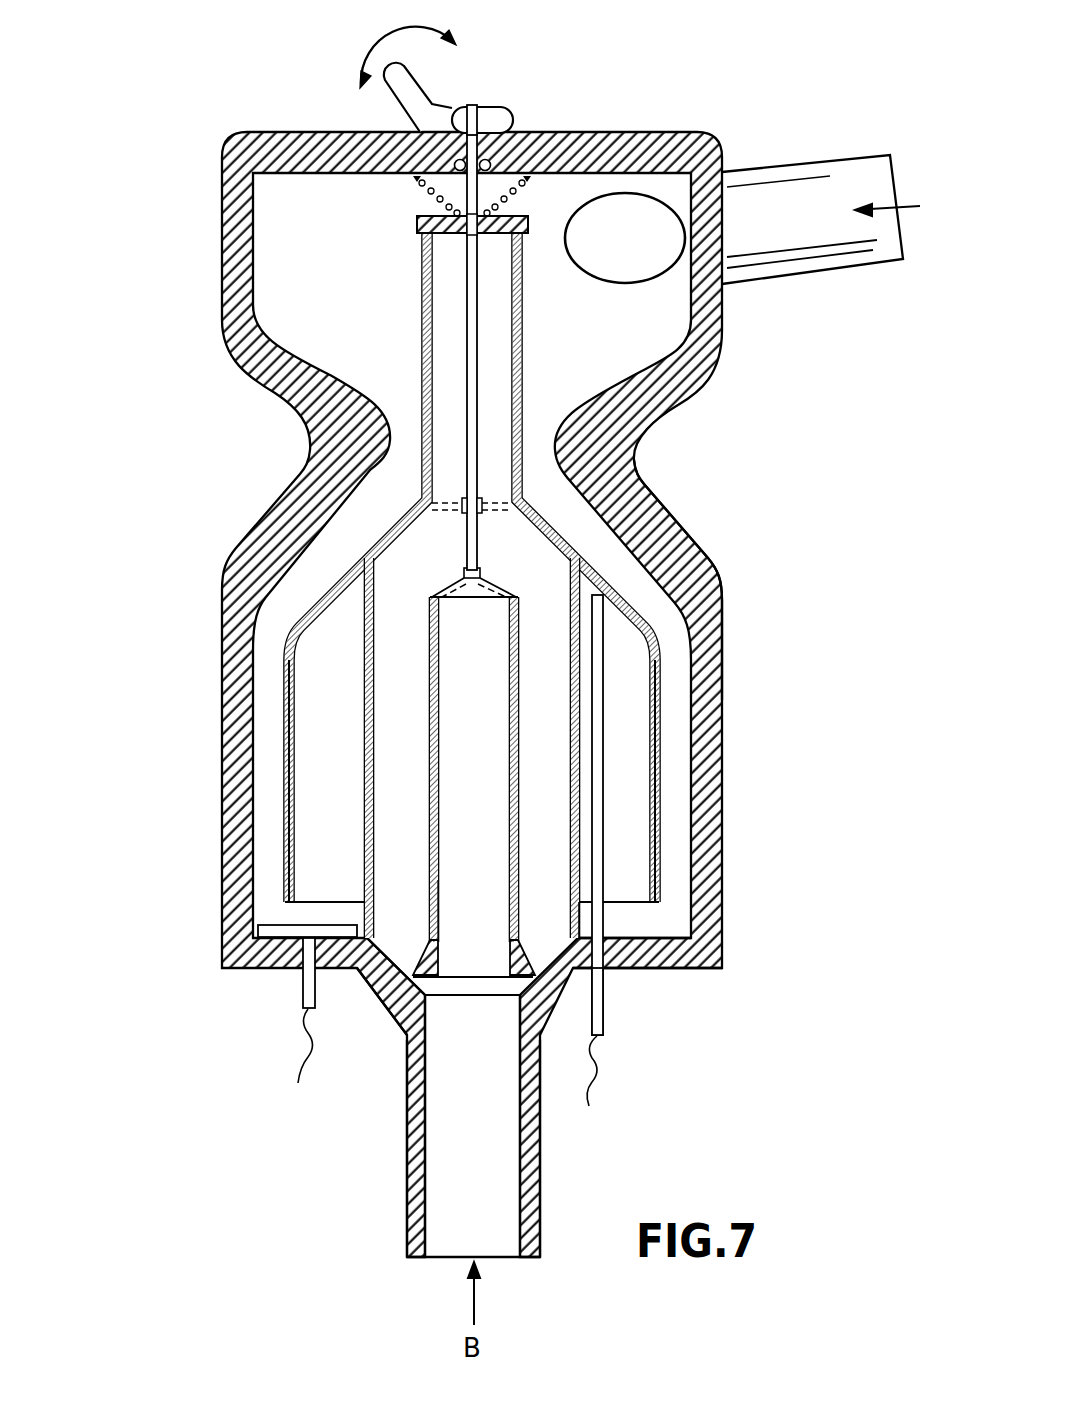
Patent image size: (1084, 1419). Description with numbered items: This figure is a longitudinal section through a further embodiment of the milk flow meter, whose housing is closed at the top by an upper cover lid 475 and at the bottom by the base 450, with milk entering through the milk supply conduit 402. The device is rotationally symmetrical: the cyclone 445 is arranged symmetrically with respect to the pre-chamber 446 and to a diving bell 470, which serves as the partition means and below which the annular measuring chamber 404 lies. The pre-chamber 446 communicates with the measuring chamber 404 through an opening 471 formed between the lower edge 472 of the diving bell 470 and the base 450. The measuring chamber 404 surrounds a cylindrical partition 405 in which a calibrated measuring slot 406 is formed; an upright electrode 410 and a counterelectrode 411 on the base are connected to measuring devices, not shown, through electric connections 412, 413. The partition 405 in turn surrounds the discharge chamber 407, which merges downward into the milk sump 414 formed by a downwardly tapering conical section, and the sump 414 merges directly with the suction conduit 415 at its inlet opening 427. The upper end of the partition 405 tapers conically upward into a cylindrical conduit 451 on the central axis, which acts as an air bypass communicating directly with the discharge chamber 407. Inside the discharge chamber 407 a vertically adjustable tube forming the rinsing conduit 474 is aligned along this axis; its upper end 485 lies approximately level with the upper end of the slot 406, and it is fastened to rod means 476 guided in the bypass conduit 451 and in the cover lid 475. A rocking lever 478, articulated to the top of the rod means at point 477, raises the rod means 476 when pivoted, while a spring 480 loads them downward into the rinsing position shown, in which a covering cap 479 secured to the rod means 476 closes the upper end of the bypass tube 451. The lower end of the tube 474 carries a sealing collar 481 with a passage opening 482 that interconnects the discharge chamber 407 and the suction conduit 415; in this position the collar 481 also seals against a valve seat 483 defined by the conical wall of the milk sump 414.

The milk supply conduit 402 is at (810, 206).
The measuring chamber 404 is at (660, 820).
The cylindrical partition 405 is at (352, 750).
The calibrated measuring slot 406 is at (572, 688).
The discharge chamber 407 is at (432, 820).
The electrode 410 is at (597, 1012).
The counterelectrode 411 is at (277, 928).
The tube end 412 is at (592, 1107).
The drain tube 413 is at (306, 1030).
The milk sump 414 is at (407, 945).
The suction conduit 415 is at (470, 1137).
The inlet opening of the suction conduit 427 is at (458, 995).
The cyclone 445 is at (368, 301).
The pre-chamber 446 is at (267, 732).
The base 450 is at (687, 970).
The cylindrical conduit 451 is at (422, 375).
The diving bell 470 is at (655, 635).
The opening 471 is at (632, 923).
The lower edge of the diving bell 472 is at (653, 915).
The rinsing conduit tube 474 is at (434, 697).
The upper cover lid 475 is at (612, 150).
The rod means 476 is at (470, 312).
The articulation point 477 is at (477, 107).
The rocking lever 478 is at (413, 96).
The covering cap 479 is at (417, 227).
The spring 480 is at (418, 178).
The sealing collar 481 is at (498, 968).
The passage opening 482 is at (440, 943).
The valve seat 483 is at (548, 945).
The upper end of the rinsing tube 485 is at (473, 609).